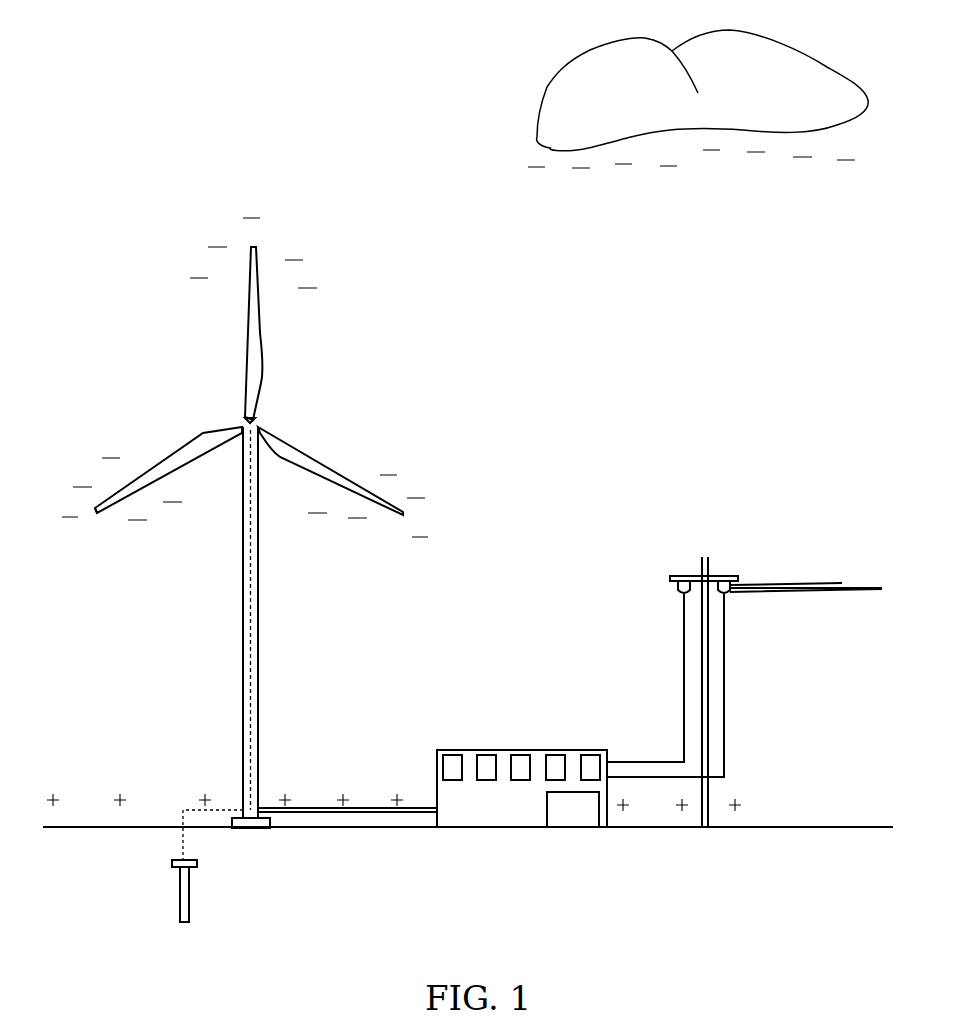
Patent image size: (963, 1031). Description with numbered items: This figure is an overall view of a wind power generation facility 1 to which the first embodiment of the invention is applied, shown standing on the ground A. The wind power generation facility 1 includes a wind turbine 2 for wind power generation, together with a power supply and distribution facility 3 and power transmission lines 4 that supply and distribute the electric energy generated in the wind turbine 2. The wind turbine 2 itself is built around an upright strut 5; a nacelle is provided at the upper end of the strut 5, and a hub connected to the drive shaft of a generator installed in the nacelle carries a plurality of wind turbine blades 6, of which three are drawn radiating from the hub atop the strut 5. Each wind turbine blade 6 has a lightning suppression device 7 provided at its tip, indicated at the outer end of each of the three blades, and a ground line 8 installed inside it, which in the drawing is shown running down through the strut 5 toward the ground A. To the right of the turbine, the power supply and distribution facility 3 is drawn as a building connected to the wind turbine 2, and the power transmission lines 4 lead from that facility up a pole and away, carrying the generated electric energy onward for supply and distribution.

The wind power generation facility 1 is at (570, 535).
The wind turbine 2 is at (198, 360).
The power supply and distribution facility 3 is at (473, 750).
The power transmission lines 4 is at (683, 690).
The strut 5 is at (260, 647).
The wind turbine blades 6 is at (260, 333).
The lightning suppression device 7 is at (260, 253).
The ground line 8 is at (241, 622).
The ground A is at (168, 827).